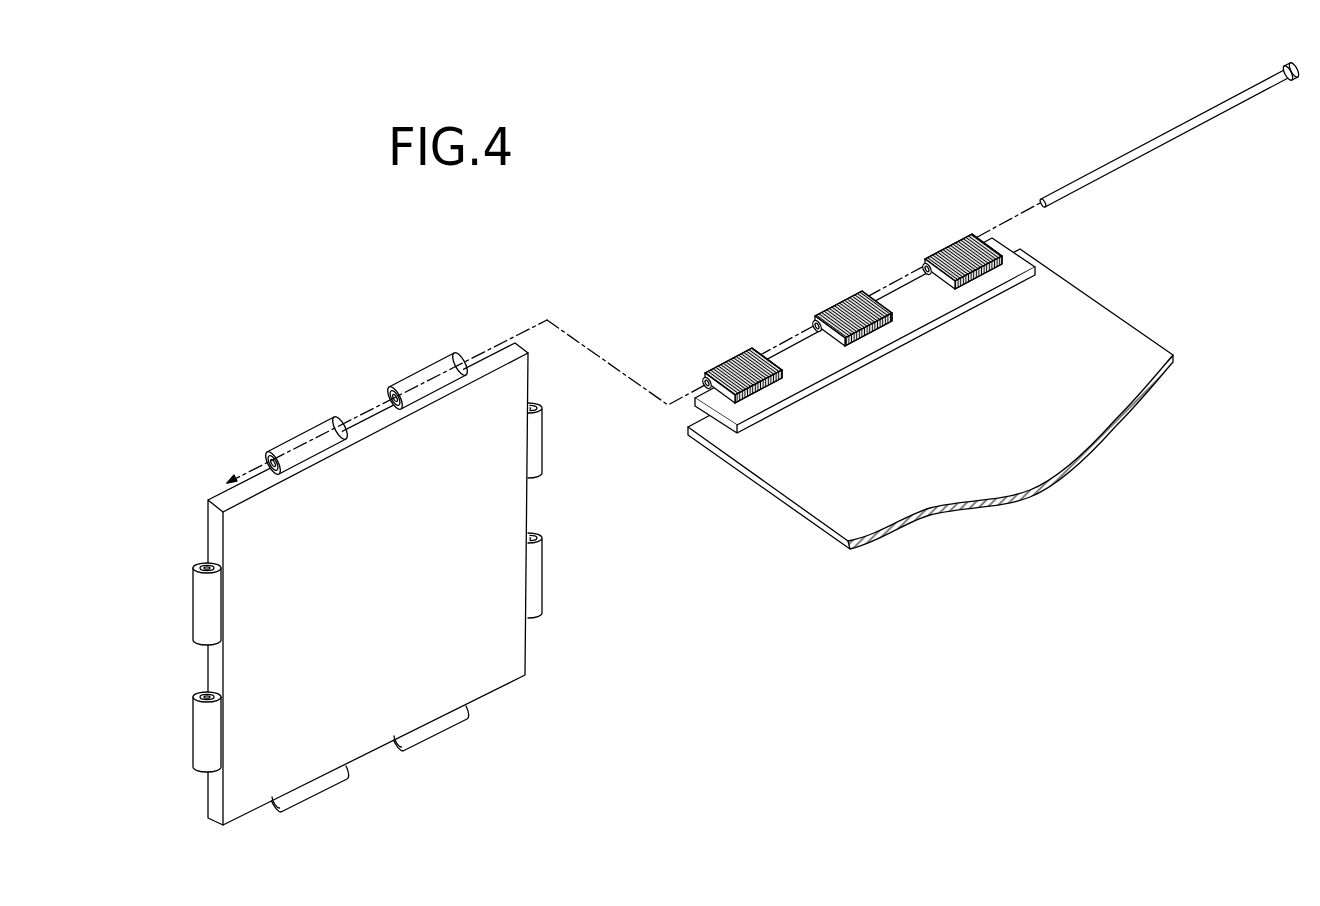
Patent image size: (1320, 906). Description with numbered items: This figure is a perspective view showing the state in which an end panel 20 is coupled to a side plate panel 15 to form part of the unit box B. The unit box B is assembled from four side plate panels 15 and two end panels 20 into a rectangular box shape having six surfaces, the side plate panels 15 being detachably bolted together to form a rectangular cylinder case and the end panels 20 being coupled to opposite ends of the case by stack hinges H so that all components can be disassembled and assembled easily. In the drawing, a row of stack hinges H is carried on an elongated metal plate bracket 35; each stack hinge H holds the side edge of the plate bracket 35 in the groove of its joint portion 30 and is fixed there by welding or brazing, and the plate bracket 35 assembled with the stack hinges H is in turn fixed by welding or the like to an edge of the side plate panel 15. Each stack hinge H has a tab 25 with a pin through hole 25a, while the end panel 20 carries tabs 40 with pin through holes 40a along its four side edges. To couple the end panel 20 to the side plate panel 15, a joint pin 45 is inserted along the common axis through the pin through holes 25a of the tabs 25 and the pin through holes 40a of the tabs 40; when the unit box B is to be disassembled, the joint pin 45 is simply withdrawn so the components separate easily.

The side plate panel 15 is at (1020, 460).
The end panel 20 is at (462, 653).
The tab 25 is at (920, 266).
The pin through hole 25a is at (815, 323).
The joint portion 30 is at (1007, 232).
The plate bracket 35 is at (983, 277).
The tab 40 is at (453, 361).
The pin through hole 40a is at (398, 386).
The joint pin 45 is at (1147, 142).
The stack hinge H is at (950, 236).
The unit box B is at (817, 622).